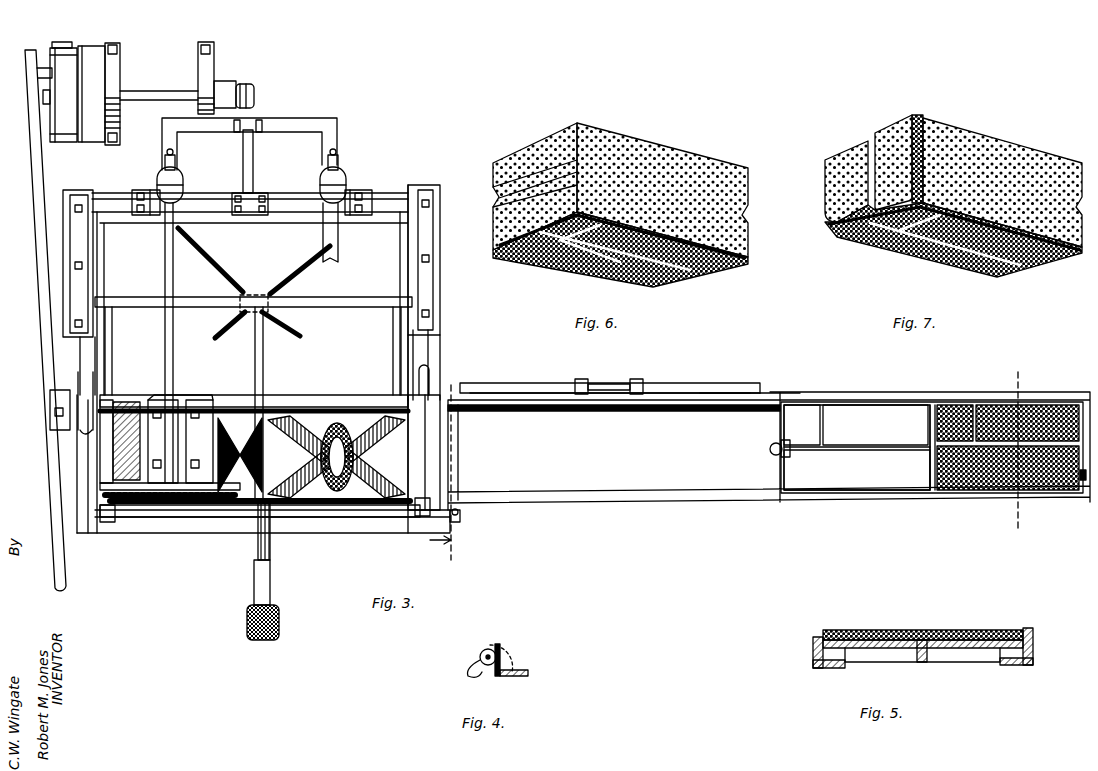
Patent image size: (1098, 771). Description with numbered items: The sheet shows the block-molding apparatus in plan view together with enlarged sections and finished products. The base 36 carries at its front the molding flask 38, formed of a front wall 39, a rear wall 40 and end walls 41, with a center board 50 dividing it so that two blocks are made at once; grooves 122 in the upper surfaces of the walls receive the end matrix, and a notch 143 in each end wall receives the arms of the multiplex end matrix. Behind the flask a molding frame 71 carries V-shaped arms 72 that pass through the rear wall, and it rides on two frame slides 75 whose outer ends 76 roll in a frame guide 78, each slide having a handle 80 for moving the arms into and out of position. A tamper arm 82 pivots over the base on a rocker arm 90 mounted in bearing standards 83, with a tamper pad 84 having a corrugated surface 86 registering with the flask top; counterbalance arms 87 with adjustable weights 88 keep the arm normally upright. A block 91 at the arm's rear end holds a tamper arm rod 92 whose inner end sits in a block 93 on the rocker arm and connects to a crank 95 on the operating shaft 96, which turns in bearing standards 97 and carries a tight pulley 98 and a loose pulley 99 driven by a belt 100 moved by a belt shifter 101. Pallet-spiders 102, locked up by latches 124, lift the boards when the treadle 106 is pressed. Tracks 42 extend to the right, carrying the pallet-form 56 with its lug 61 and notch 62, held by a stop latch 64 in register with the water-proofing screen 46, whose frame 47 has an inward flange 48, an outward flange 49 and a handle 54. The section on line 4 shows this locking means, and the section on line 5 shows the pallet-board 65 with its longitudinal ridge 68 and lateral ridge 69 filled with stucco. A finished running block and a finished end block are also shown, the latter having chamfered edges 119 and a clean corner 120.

In FIG. 3, the belt shifter 101 is at (41, 305).
In FIG. 3, the belt 100 is at (54, 42).
In FIG. 3, the loose pulley 99 is at (86, 40).
In FIG. 3, the tight pulley 98 is at (110, 46).
In FIG. 3, the bearing standards 97 is at (114, 82).
In FIG. 3, the operating shaft 96 is at (140, 97).
In FIG. 3, the crank 95 is at (226, 88).
In FIG. 3, the rocker arm 90 is at (282, 200).
In FIG. 3, the block 91 is at (256, 132).
In FIG. 3, the tamper arm rod 92 is at (243, 162).
In FIG. 3, the block 93 is at (244, 198).
In FIG. 3, the adjustable weight 88 is at (176, 178).
In FIG. 3, the counterbalance arms 87 is at (166, 160).
In FIG. 3, the bearing standards 83 is at (152, 194).
In FIG. 3, the frame guide 78 is at (86, 194).
In FIG. 3, the outer end 76 is at (80, 238).
In FIG. 3, the base 36 is at (430, 334).
In FIG. 3, the frame slides 75 is at (90, 365).
In FIG. 3, the handle 80 is at (50, 392).
In FIG. 3, the molding frame 71 is at (352, 300).
In FIG. 3, the bar 40 is at (325, 400).
In FIG. 3, the V-shaped arms 72 is at (112, 368).
In FIG. 3, the tamper arm 82 is at (168, 262).
In FIG. 3, the tamper pad 84 is at (140, 402).
In FIG. 3, the corrugated surface 86 is at (214, 402).
In FIG. 3, the center board 50 is at (330, 457).
In FIG. 3, the latch 124 is at (348, 430).
In FIG. 3, the pallet-spider 102 is at (332, 485).
In FIG. 3, the end walls 41 is at (420, 450).
In FIG. 3, the molding flask 38 is at (356, 520).
In FIG. 3, the front wall 39 is at (218, 520).
In FIG. 3, the notch 143 is at (104, 522).
In FIG. 3, the grooves 122 is at (258, 525).
In FIG. 3, the treadle 106 is at (262, 594).
In FIG. 3, the section line 4— 4 is at (458, 478).
In FIG. 3, the tracks 42 is at (705, 405).
In FIG. 4, the tracks 42 is at (528, 672).
In FIG. 5, the tracks 42 is at (1048, 642).
In FIG. 3, the water-proofing screen 46 is at (684, 386).
In FIG. 3, the outwardly extending flange 49 is at (718, 378).
In FIG. 3, the inwardly extending flange 48 is at (725, 395).
In FIG. 3, the frame 47 is at (778, 394).
In FIG. 3, the handle 54 is at (590, 386).
In FIG. 3, the outwardly extending lug 61 is at (778, 446).
In FIG. 3, the notch 62 is at (776, 456).
In FIG. 3, the stop latch 64 is at (462, 518).
In FIG. 4, the stop latch 64 is at (480, 657).
In FIG. 3, the pallet-form 56 is at (910, 400).
In FIG. 5, the pallet-form 56 is at (822, 636).
In FIG. 3, the pallet-board 65 is at (832, 492).
In FIG. 5, the pallet-board 65 is at (985, 660).
In FIG. 3, the lateral ridge 69 is at (820, 422).
In FIG. 3, the longitudinal ridge 68 is at (880, 440).
In FIG. 5, the longitudinal ridge 68 is at (925, 632).
In FIG. 3, the section line 5— 5 is at (1017, 448).
In FIG. 7, the edges 119 is at (830, 234).
In FIG. 7, the corner 120 is at (848, 246).